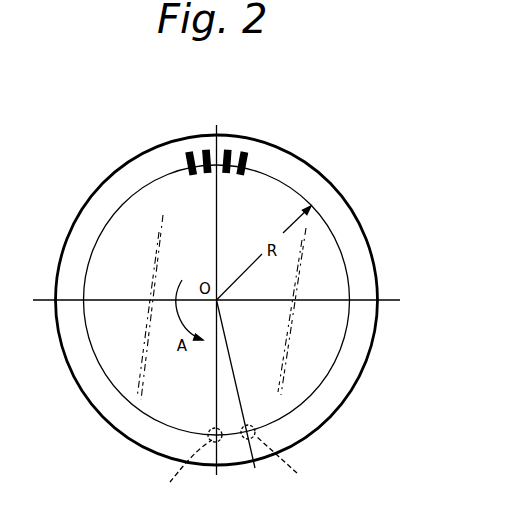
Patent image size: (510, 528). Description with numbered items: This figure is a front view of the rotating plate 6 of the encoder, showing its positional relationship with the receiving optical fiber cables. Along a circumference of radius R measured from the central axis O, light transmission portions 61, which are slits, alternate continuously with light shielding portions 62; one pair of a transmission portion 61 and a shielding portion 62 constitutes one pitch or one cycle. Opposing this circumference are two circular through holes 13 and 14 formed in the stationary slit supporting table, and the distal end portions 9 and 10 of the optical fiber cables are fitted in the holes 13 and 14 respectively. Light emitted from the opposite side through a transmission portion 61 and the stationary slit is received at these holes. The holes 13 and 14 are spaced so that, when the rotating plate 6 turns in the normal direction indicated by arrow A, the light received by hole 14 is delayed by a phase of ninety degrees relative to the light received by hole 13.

The rotating plate 6 is at (343, 198).
The light transmission portion 61 is at (236, 156).
The light shielding portion 62 is at (192, 150).
The distal end portion of optical fiber cable 9 is at (180, 468).
The distal end portion of optical fiber cable 10 is at (289, 462).
The circular through hole 13 is at (208, 428).
The circular through hole 14 is at (252, 421).